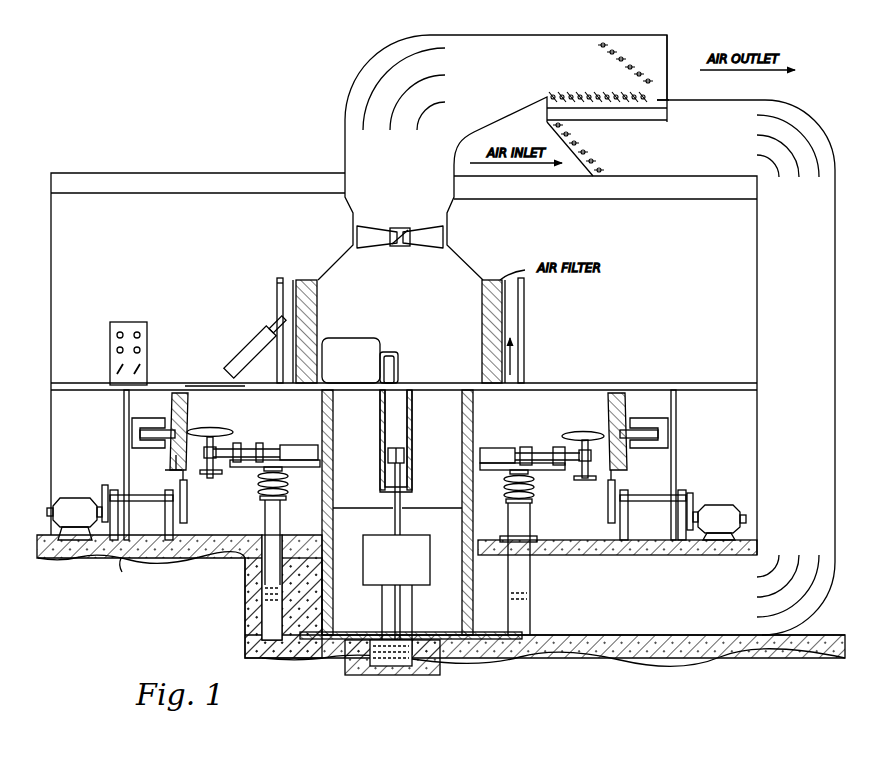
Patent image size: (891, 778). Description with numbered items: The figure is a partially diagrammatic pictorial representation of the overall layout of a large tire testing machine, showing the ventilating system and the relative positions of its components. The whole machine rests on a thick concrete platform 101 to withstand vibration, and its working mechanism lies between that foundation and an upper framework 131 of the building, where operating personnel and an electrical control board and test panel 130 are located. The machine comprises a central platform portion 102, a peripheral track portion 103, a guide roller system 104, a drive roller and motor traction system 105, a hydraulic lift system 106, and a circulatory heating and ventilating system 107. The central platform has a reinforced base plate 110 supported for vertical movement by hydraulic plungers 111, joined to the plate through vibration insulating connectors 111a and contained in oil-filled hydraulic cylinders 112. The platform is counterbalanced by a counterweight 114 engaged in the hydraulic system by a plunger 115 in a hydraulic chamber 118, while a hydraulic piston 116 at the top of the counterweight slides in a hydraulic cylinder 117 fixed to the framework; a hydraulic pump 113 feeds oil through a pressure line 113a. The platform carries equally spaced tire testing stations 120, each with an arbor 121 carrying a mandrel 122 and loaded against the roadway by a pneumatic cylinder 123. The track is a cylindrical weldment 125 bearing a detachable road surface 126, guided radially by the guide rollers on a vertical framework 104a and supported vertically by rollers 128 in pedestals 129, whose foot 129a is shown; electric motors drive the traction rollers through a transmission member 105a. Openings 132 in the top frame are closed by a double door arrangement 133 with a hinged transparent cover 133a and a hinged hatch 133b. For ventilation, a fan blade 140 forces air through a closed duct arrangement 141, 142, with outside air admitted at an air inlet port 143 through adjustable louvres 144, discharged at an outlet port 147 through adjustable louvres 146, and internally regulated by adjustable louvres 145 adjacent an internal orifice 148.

The concrete platform 101 is at (847, 637).
The central platform portion 102 is at (492, 433).
The peripheral track portion 103 is at (168, 458).
The guide roller system 104 is at (148, 417).
The vertical framework 104a is at (124, 424).
The drive roller and motor traction system 105 is at (72, 497).
The transmission member 105a is at (104, 485).
The hydraulic lift system 106 is at (381, 600).
The circulatory heating and ventilating system 107 is at (466, 249).
The reinforced base plate 110 is at (250, 468).
The hydraulic plungers 111 is at (265, 518).
The vibration insulating connectors 111a is at (283, 482).
The hydraulic cylinders 112 is at (258, 618).
The hydraulic pump 113 is at (352, 337).
The pressure line 113a is at (396, 353).
The counterweight 114 is at (396, 524).
The plunger 115 is at (401, 610).
The hydraulic piston 116 is at (406, 455).
The hydraulic cylinder 117 is at (411, 426).
The hydraulic chamber 118 is at (400, 672).
The tire testing stations 120 is at (252, 430).
The arbor 121 is at (258, 447).
The mandrel 122 is at (216, 476).
The pneumatic cylinder 123 is at (296, 445).
The cylindrical weldment 125 is at (172, 383).
The road surface 126 is at (190, 412).
The rollers 128 is at (188, 520).
The pedestals 129 is at (140, 501).
The frame foot 129a is at (137, 569).
The electrical control board and test panel 130 is at (128, 322).
The upper framework 131 is at (53, 372).
The openings 132 is at (200, 383).
The double door arrangement 133 is at (241, 354).
The hinged transparent cover 133a is at (262, 330).
The hinged door or hatch 133b is at (278, 300).
The fan blade 140 is at (428, 226).
The duct 141 is at (500, 77).
The duct 142 is at (837, 268).
The air inlet port 143 is at (550, 126).
The adjustable louvres 144 is at (598, 146).
The adjustable louvres 145 is at (585, 92).
The adjustable louvres 146 is at (636, 60).
The outlet port 147 is at (672, 40).
The internal orifice 148 is at (669, 122).